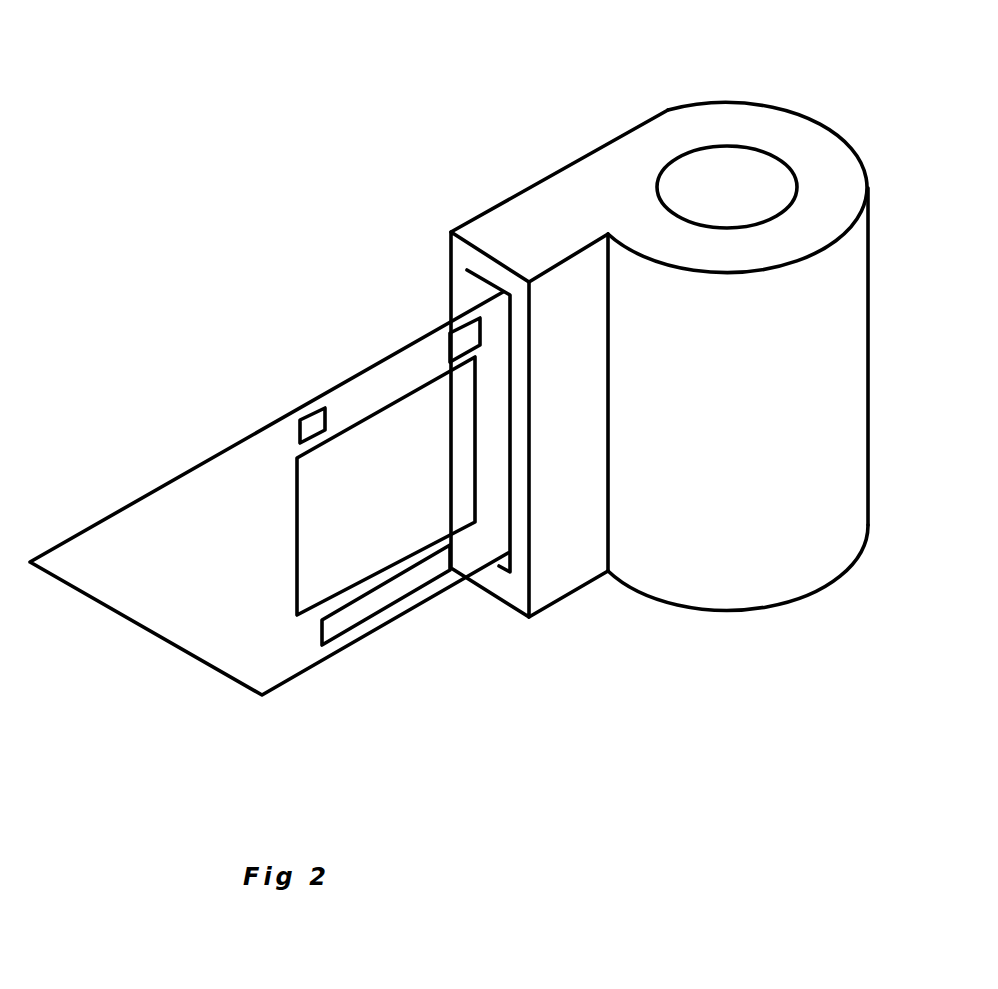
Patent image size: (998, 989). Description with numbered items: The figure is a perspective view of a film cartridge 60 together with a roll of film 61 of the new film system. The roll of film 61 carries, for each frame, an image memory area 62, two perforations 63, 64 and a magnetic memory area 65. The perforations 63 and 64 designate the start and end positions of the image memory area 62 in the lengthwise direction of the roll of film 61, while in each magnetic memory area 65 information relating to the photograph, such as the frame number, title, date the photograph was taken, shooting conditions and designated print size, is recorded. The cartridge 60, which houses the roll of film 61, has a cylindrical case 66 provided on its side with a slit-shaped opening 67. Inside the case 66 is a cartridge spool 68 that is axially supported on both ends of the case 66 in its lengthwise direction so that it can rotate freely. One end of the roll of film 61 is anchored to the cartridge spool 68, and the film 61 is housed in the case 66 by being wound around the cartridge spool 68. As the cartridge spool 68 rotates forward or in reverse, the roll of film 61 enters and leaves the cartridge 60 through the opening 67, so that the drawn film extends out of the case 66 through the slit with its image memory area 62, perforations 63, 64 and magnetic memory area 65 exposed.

The cartridge 60 is at (721, 390).
The roll of film 61 is at (269, 485).
The image memory area 62 is at (333, 530).
The perforation 63 is at (316, 405).
The perforation 64 is at (445, 345).
The magnetic memory area 65 is at (382, 602).
The cylindrical case 66 is at (810, 355).
The slit-shaped opening 67 is at (502, 570).
The cartridge spool 68 is at (728, 183).